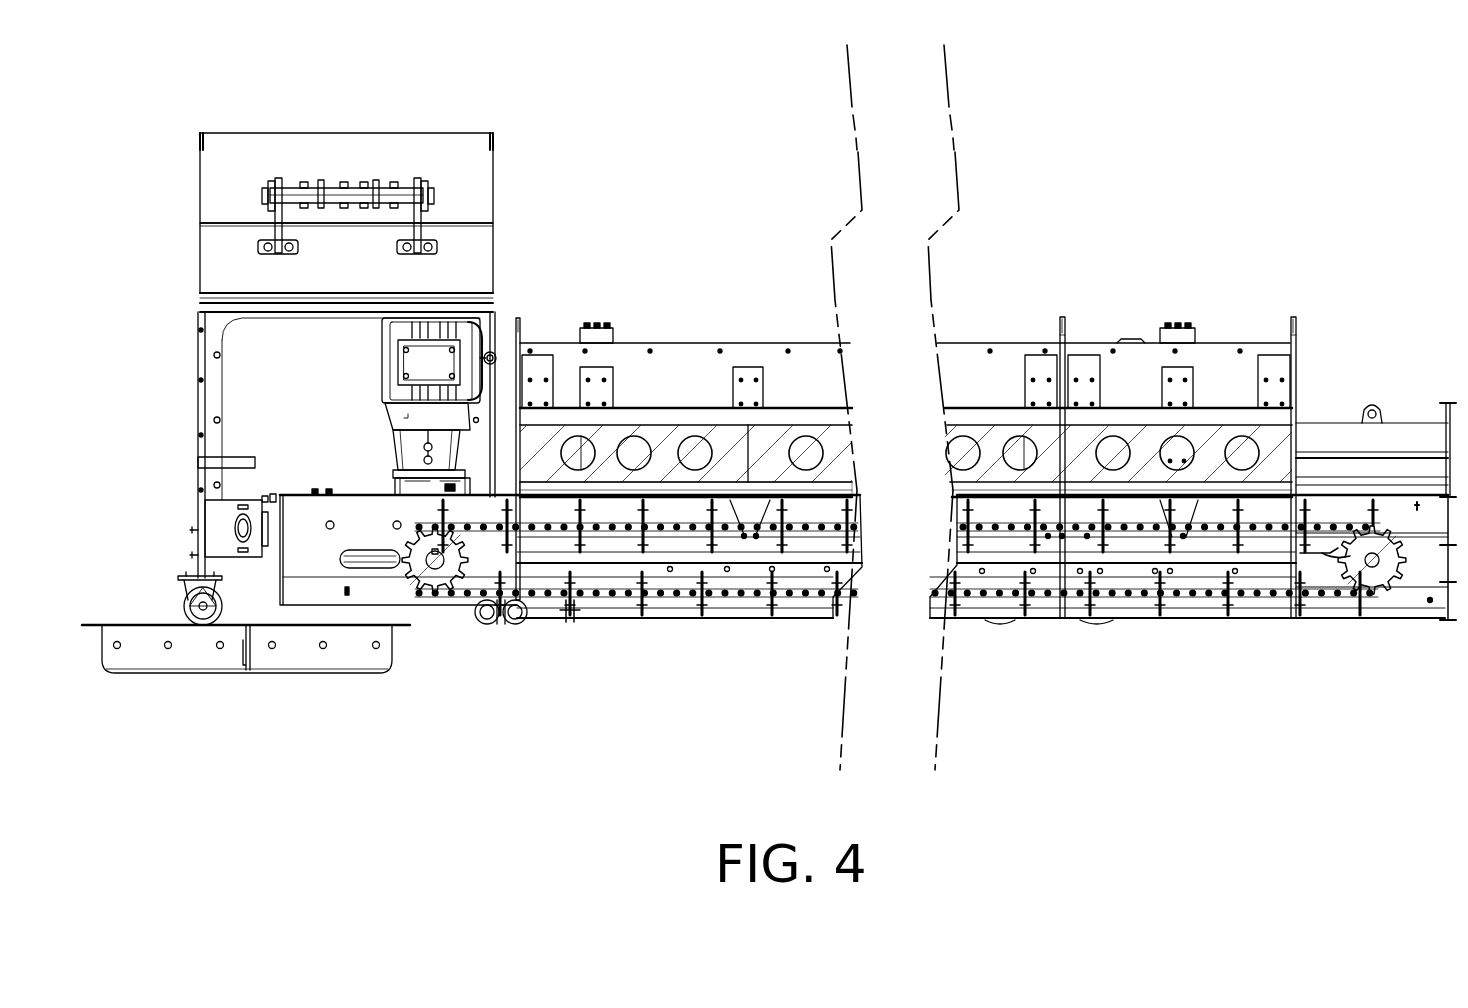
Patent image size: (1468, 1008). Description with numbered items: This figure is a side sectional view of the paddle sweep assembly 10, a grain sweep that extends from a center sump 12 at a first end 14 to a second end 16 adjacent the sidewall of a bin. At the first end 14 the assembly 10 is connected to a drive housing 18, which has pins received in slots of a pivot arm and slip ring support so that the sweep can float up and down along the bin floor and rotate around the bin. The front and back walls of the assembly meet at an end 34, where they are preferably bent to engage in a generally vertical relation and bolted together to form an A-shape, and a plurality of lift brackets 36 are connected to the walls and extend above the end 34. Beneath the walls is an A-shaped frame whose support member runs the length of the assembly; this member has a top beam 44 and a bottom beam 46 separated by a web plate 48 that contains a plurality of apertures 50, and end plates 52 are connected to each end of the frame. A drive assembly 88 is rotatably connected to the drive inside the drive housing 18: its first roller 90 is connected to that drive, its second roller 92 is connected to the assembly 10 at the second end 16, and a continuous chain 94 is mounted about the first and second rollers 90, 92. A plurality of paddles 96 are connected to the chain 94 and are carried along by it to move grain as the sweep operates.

The paddle sweep assembly 10 is at (1122, 220).
The center sump 12 is at (178, 676).
The first end 14 is at (539, 301).
The second end 16 is at (1178, 402).
The drive housing 18 is at (465, 178).
The end 34 is at (724, 343).
The lift brackets 36 is at (614, 334).
The top beam 44 is at (672, 406).
The bottom beam 46 is at (833, 488).
The web plate 48 is at (607, 447).
The apertures 50 is at (694, 453).
The end plates 52 is at (501, 346).
The drive assembly 88 is at (380, 470).
The first roller 90 is at (436, 582).
The second roller 92 is at (1369, 577).
The continuous chain 94 is at (668, 598).
The paddles 96 is at (571, 612).